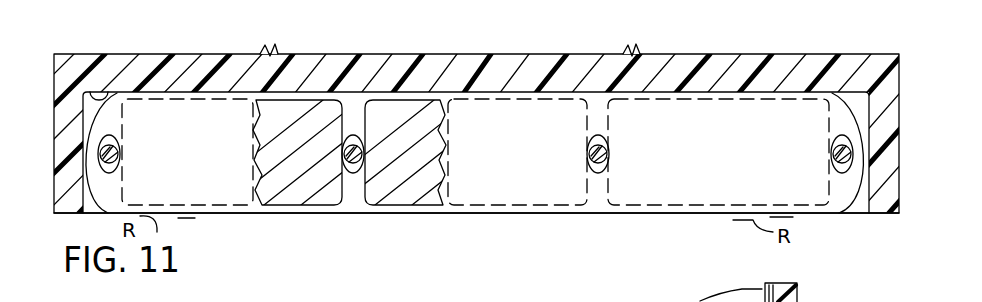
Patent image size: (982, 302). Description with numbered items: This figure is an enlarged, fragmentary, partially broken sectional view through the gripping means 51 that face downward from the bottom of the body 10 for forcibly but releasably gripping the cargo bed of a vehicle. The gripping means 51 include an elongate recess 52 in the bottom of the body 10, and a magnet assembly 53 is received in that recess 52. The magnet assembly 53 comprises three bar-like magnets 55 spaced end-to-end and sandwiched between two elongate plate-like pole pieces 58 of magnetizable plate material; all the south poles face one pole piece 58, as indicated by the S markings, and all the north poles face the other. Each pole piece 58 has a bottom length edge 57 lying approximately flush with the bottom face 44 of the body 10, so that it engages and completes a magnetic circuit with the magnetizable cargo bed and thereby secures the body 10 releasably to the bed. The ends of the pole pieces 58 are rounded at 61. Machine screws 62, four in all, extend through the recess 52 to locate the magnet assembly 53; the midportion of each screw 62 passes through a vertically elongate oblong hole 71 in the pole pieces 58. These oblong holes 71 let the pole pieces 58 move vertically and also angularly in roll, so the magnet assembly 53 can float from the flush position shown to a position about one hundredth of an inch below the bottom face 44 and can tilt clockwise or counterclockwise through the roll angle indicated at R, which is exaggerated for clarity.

The body 10 is at (852, 226).
The bottom face 44 is at (877, 212).
The gripping means 51 is at (287, 238).
The elongate recess 52 is at (93, 93).
The magnet assembly 53 is at (312, 223).
The bar-like magnets 55 is at (290, 106).
The bottom length edge 57 is at (422, 214).
The pole pieces 58 is at (357, 105).
The rounded ends 61 is at (98, 201).
The machine screws 62 is at (100, 152).
The oblong holes 71 is at (103, 141).